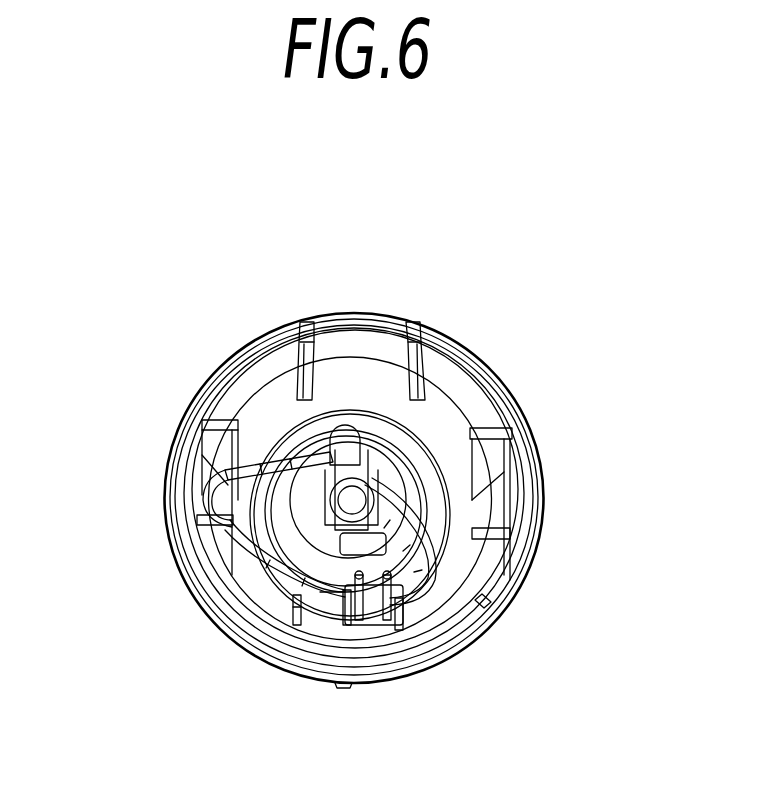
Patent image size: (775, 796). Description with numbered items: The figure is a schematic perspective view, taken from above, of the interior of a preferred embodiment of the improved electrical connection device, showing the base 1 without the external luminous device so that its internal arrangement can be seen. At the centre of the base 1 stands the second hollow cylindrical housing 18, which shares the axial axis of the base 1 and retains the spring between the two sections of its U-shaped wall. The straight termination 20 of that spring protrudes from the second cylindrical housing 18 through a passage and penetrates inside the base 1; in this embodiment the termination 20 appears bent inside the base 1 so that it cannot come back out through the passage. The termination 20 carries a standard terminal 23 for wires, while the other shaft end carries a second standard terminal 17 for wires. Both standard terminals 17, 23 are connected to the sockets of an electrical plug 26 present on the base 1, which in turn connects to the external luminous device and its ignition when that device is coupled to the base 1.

The base 1 is at (424, 518).
The standard terminal for wires 17 is at (449, 533).
The second hollow cylindrical housing 18 is at (241, 530).
The straight termination 20 is at (205, 435).
The standard terminal for wires 23 is at (174, 478).
The electrical plug 26 is at (255, 681).